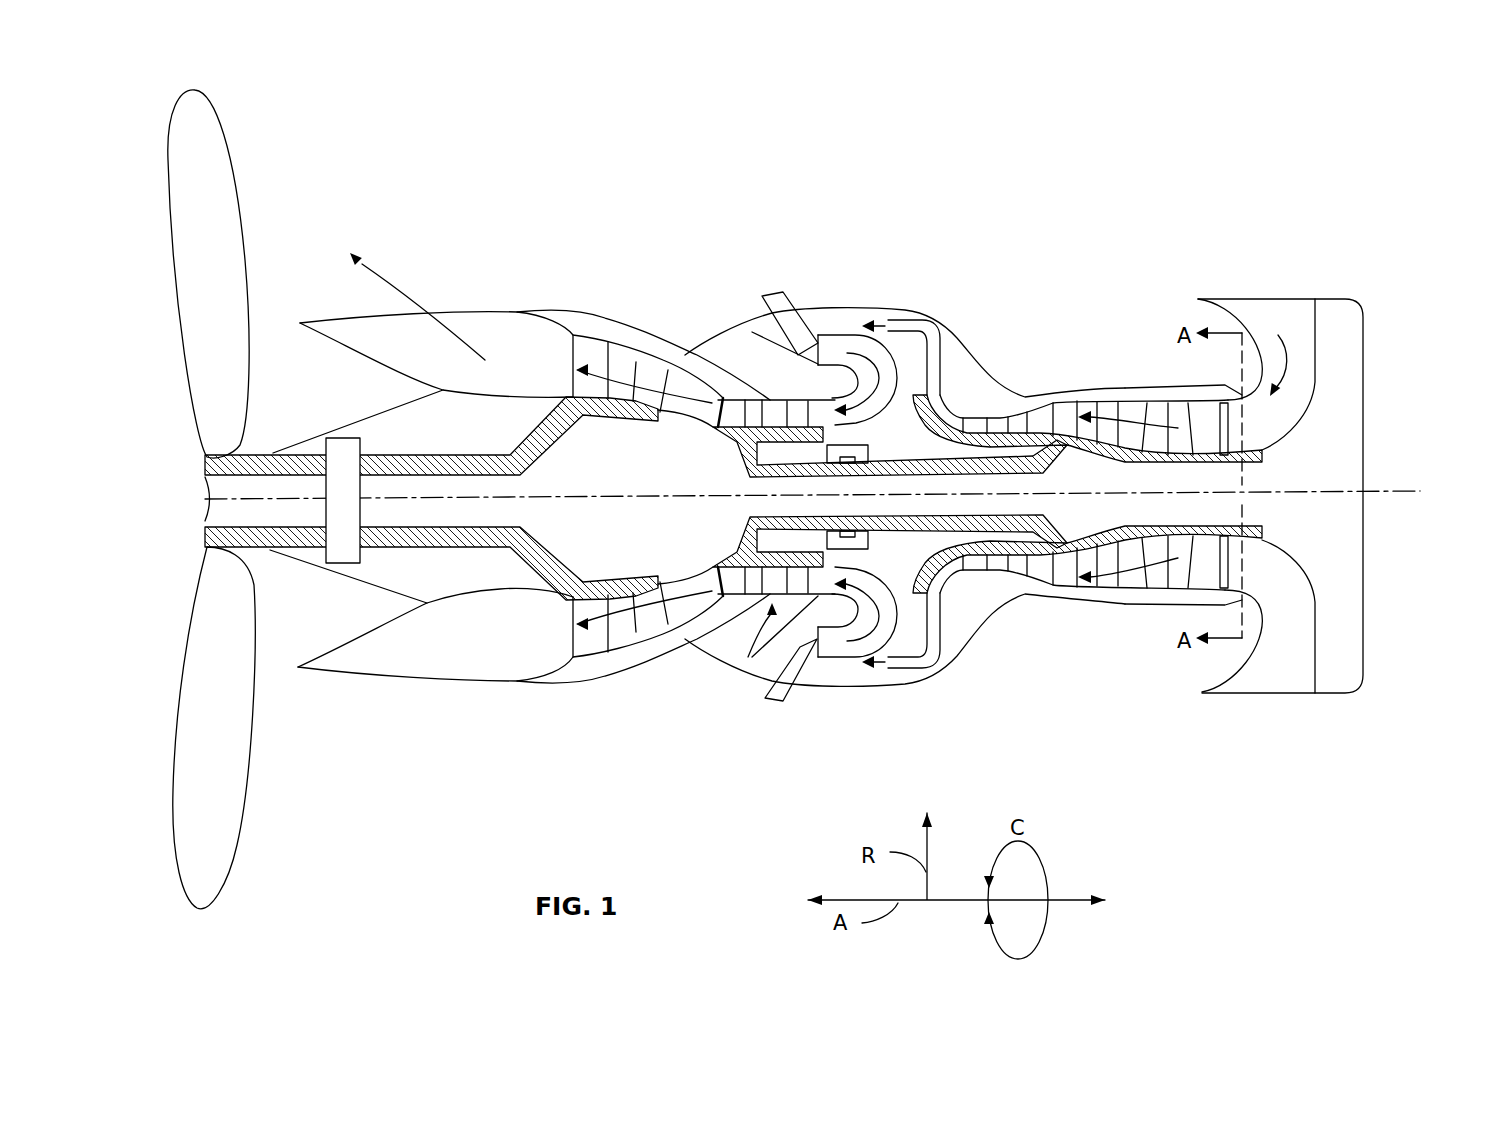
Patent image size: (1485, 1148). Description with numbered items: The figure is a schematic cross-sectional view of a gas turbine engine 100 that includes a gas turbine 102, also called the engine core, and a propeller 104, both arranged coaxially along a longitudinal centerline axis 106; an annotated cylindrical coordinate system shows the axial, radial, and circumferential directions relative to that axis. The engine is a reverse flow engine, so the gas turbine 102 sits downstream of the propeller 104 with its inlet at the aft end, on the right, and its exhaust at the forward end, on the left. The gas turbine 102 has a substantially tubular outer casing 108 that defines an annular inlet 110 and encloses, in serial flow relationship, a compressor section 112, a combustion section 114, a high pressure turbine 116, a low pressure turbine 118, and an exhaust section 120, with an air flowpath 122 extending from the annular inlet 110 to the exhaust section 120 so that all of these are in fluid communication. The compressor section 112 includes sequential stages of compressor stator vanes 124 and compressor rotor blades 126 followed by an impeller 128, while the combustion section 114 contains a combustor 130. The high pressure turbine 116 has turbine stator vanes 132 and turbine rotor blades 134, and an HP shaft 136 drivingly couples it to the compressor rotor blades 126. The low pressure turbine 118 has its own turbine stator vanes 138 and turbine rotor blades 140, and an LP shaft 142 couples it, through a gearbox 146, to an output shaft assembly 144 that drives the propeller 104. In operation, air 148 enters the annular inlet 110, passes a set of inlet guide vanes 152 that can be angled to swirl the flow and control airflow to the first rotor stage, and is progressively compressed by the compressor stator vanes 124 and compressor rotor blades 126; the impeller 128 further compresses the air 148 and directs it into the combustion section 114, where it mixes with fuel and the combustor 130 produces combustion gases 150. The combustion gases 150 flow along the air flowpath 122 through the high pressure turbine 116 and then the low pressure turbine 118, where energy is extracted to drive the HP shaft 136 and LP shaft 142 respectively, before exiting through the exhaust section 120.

The gas turbine engine 100 is at (478, 118).
The gas turbine 102 is at (955, 299).
The propeller 104 is at (199, 68).
The centerline axis 106 is at (1380, 490).
The outer casing 108 is at (834, 302).
The annular inlet 110 is at (1239, 288).
The compressor section 112 is at (1108, 625).
The combustion section 114 is at (842, 686).
The high pressure turbine 116 is at (765, 645).
The low pressure turbine 118 is at (607, 681).
The exhaust section 120 is at (480, 670).
The air flowpath 122 is at (938, 385).
The compressor stator vanes 124 is at (1122, 560).
The compressor rotor blades 126 is at (1108, 578).
The impeller 128 is at (958, 588).
The combustor 130 is at (832, 335).
The turbine stator vanes 132 is at (776, 398).
The turbine rotor blades 134 is at (698, 353).
The HP shaft 136 is at (1018, 422).
The turbine stator vanes 138 is at (648, 370).
The turbine rotor blades 140 is at (620, 360).
The LP shaft 142 is at (398, 455).
The output shaft assembly 144 is at (305, 453).
The gearbox 146 is at (337, 563).
The air 148 is at (1292, 365).
The combustion gases 150 is at (888, 376).
The inlet guide vanes 152 is at (1218, 425).